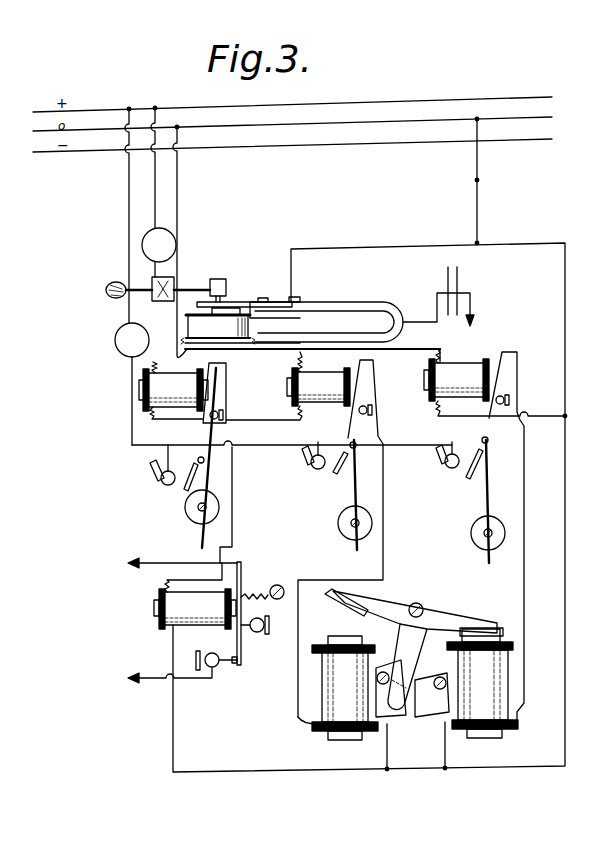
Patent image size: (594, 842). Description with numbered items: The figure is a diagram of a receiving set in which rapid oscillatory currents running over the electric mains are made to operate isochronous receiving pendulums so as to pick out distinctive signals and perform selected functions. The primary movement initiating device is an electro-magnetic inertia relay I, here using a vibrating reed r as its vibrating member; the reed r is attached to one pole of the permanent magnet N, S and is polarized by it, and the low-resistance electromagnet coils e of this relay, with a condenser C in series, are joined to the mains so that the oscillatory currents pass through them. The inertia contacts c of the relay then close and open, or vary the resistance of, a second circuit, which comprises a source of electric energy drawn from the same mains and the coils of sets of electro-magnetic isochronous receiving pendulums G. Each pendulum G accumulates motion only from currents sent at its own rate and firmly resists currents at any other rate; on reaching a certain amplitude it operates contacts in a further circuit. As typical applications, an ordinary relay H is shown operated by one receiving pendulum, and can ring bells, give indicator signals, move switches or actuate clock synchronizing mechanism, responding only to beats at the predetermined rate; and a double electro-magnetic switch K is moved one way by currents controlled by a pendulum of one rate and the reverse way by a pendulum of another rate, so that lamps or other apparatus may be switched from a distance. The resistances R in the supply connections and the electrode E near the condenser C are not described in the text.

The resistance R is at (145, 336).
The inertia contacts c is at (224, 282).
The vibrating reed r is at (250, 300).
The permanent magnet pole S is at (272, 316).
The electro-magnetic inertia relay I is at (324, 304).
The electromagnet coils e is at (218, 326).
The condenser C is at (436, 307).
The electrode E is at (480, 320).
The electro-magnetic isochronous receiving pendulums G is at (165, 383).
The permanent magnet pole N is at (187, 350).
The ordinary relay H is at (219, 616).
The double electro-magnetic switch K is at (398, 660).